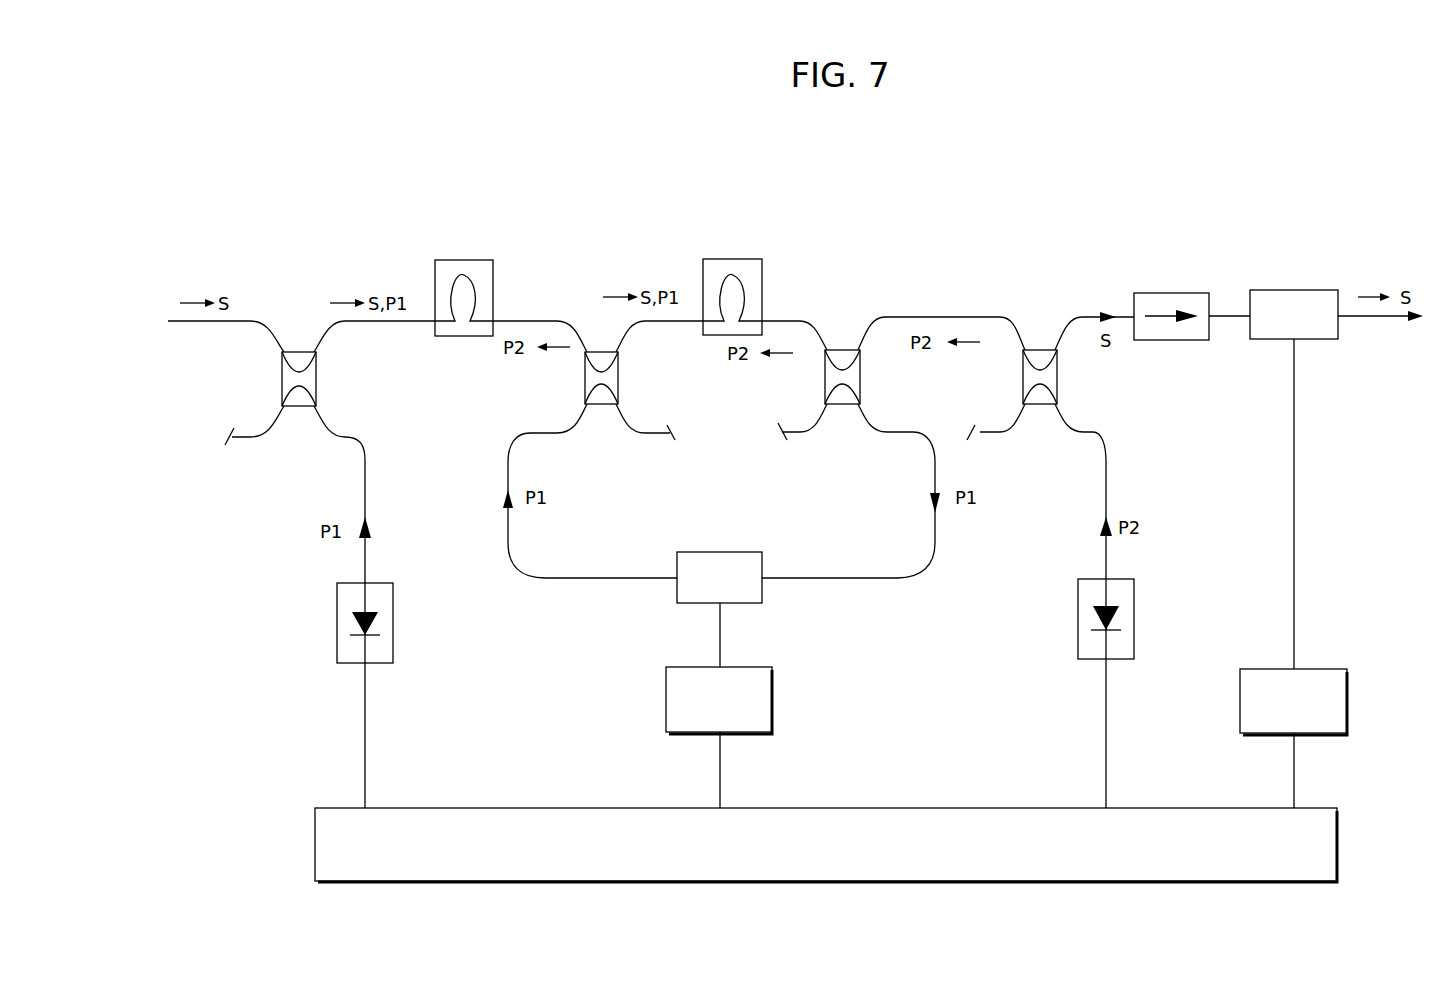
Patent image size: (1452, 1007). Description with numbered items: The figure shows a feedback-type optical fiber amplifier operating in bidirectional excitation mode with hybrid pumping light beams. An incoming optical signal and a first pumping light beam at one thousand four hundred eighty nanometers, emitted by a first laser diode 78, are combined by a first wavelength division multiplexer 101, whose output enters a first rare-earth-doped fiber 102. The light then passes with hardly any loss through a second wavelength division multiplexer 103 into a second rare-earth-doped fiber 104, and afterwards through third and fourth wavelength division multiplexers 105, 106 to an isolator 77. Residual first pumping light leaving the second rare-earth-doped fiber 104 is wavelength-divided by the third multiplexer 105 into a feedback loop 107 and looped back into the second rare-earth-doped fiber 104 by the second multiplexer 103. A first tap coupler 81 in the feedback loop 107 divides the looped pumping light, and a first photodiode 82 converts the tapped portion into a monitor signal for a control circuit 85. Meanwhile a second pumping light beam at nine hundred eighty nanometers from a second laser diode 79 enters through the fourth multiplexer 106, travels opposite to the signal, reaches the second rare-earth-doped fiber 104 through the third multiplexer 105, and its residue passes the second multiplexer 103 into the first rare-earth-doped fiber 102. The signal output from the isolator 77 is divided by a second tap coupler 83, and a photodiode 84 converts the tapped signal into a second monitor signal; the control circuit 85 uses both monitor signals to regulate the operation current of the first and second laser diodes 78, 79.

The isolator 77 is at (1176, 292).
The first laser diode 78 is at (337, 623).
The second laser diode 79 is at (1078, 622).
The first tap coupler 81 is at (719, 551).
The first photodiode 82 is at (666, 700).
The second tap coupler 83 is at (1283, 290).
The photodiode 84 is at (1240, 698).
The control circuit 85 is at (977, 808).
The first wavelength division multiplexer 101 is at (295, 350).
The first rare-earth-doped fiber 102 is at (468, 259).
The second wavelength division multiplexer 103 is at (595, 405).
The second rare-earth-doped fiber 104 is at (735, 258).
The third wavelength division multiplexer 105 is at (840, 350).
The fourth wavelength division multiplexer 106 is at (1040, 350).
The feedback loop 107 is at (857, 592).